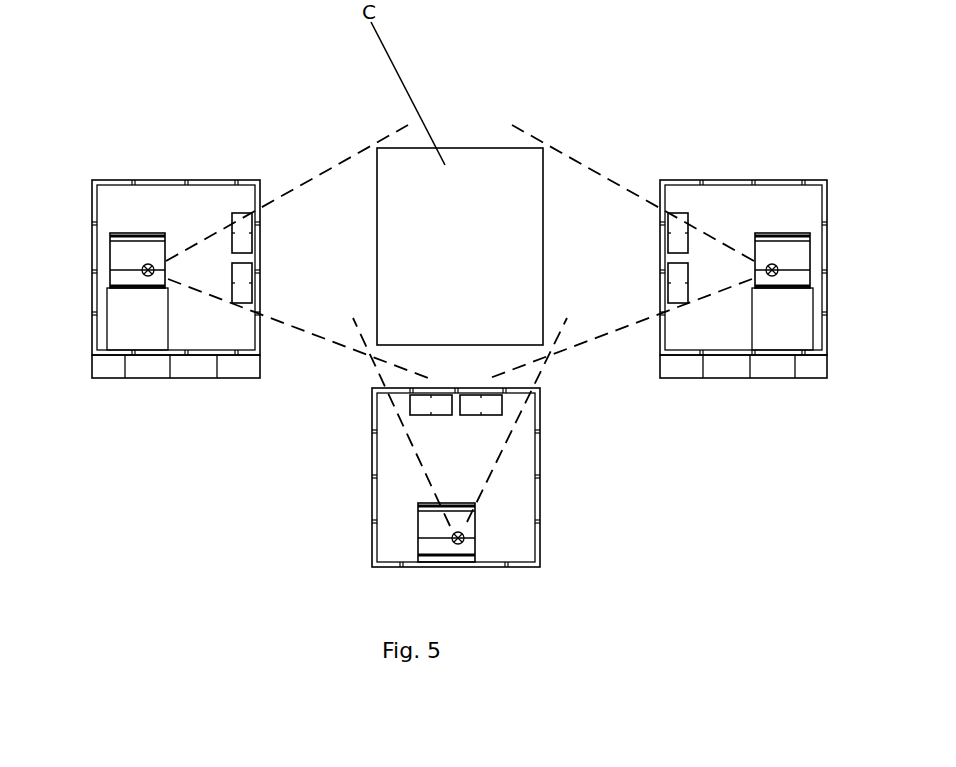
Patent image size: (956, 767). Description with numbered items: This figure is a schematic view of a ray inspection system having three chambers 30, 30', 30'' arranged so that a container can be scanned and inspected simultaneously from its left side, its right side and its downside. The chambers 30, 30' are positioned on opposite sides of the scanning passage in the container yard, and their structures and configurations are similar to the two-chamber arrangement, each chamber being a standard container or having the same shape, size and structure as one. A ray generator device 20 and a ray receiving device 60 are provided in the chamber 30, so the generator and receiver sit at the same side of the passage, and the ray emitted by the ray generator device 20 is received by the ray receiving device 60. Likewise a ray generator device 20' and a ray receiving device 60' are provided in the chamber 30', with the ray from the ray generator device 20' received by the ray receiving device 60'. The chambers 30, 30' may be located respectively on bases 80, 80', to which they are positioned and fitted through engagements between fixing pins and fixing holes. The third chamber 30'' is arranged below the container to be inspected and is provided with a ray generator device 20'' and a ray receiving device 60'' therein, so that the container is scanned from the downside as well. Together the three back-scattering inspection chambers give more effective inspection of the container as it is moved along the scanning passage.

The ray generator device 20 is at (91, 291).
The ray generator device 20' is at (811, 281).
The ray generator device 20'' is at (511, 532).
The chamber 30 is at (171, 219).
The chamber 30' is at (745, 215).
The chamber 30'' is at (498, 477).
The ray receiving device 60 is at (217, 193).
The ray receiving device 60' is at (661, 197).
The ray receiving device 60'' is at (380, 416).
The base 80 is at (149, 374).
The base 80' is at (773, 378).